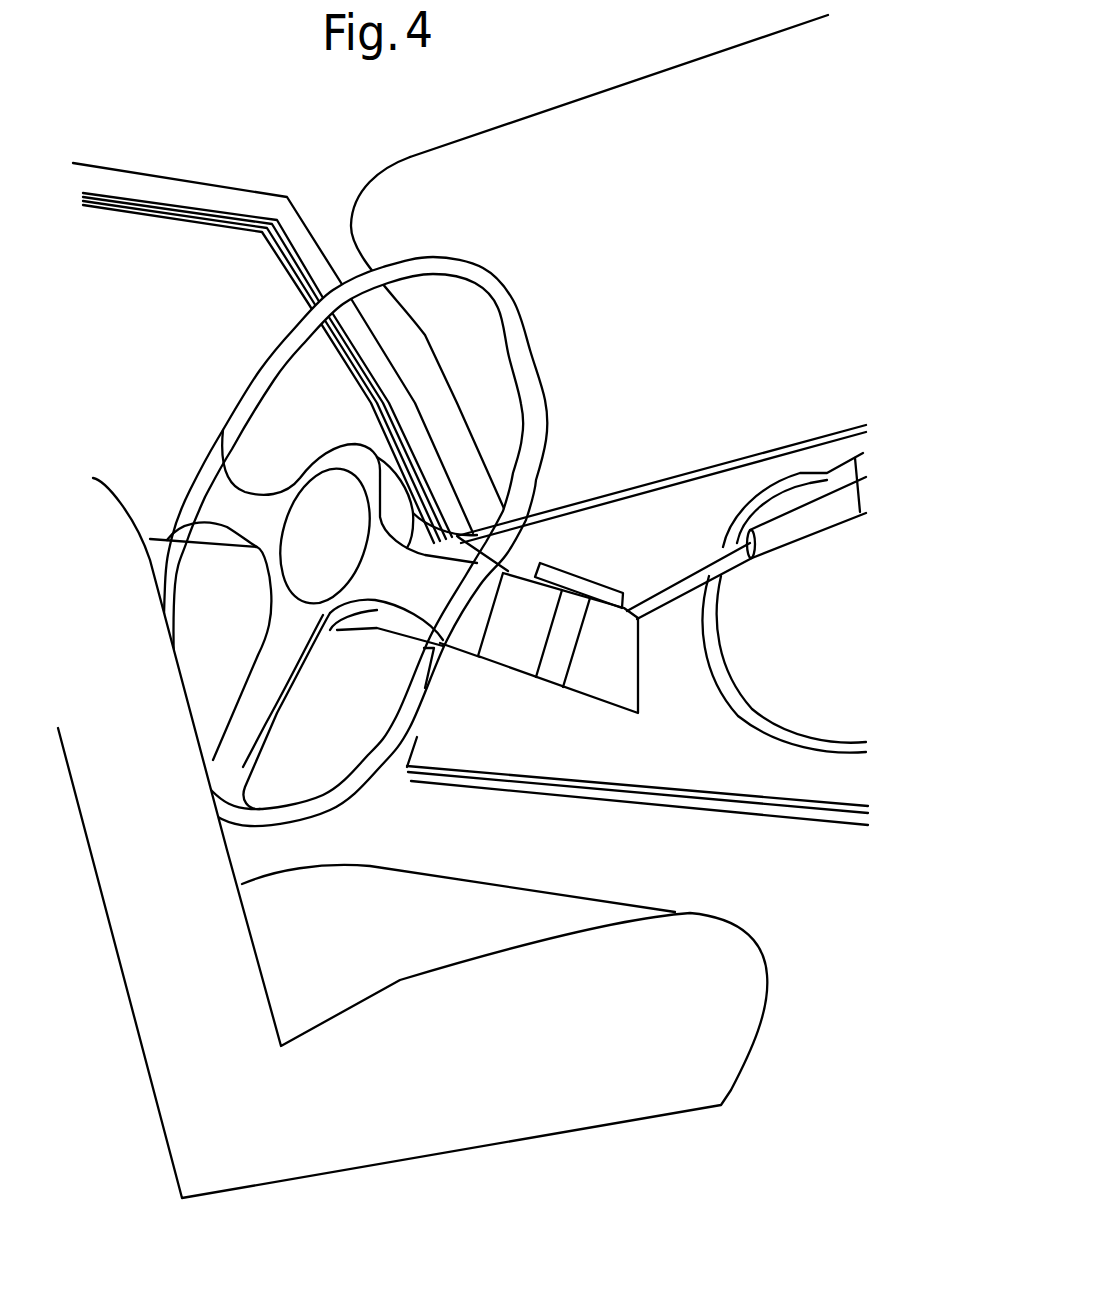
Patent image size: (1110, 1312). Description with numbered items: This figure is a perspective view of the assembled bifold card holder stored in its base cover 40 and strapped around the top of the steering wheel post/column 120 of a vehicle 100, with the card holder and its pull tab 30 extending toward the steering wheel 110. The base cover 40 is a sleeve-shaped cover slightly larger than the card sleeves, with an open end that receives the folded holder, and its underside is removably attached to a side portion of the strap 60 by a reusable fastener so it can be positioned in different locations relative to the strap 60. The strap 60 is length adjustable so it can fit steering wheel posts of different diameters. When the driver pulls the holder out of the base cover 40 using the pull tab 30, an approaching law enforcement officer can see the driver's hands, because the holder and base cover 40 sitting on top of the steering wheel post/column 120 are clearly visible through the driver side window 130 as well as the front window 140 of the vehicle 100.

The vehicle 100 is at (680, 251).
The steering wheel 110 is at (533, 427).
The steering wheel post/column 120 is at (503, 647).
The driver side window 130 is at (243, 117).
The front window 140 is at (352, 107).
The tab 30 is at (530, 562).
The base cover 40 is at (640, 578).
The strap 60 is at (562, 657).